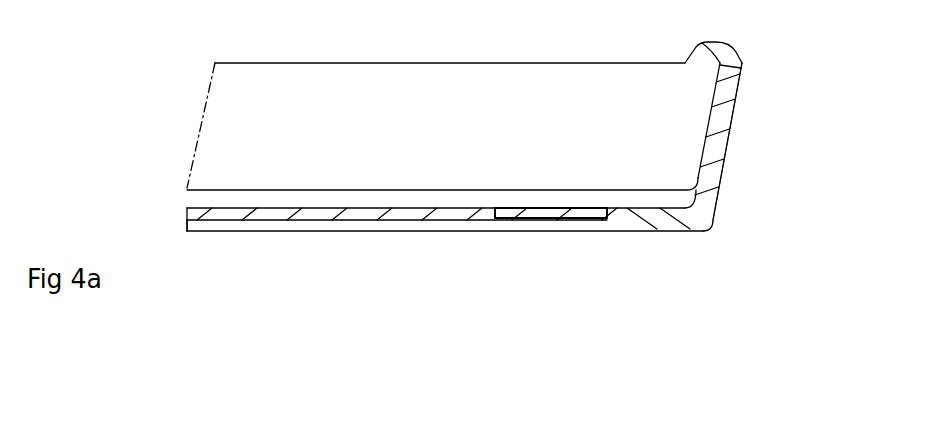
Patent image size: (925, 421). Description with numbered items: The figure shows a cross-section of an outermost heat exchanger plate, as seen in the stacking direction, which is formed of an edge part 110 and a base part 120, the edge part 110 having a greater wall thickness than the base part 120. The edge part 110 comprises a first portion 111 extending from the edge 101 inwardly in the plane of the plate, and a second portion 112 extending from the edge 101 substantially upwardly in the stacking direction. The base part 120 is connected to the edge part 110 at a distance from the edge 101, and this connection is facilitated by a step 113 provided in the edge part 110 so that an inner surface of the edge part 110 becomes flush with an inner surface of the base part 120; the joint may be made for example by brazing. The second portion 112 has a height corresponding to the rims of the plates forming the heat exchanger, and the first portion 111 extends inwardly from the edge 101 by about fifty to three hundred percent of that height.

The edge 101 is at (730, 203).
The edge part 110 is at (745, 162).
The first portion 111 is at (690, 232).
The second portion 112 is at (740, 90).
The step 113 is at (603, 220).
The base part 120 is at (372, 222).